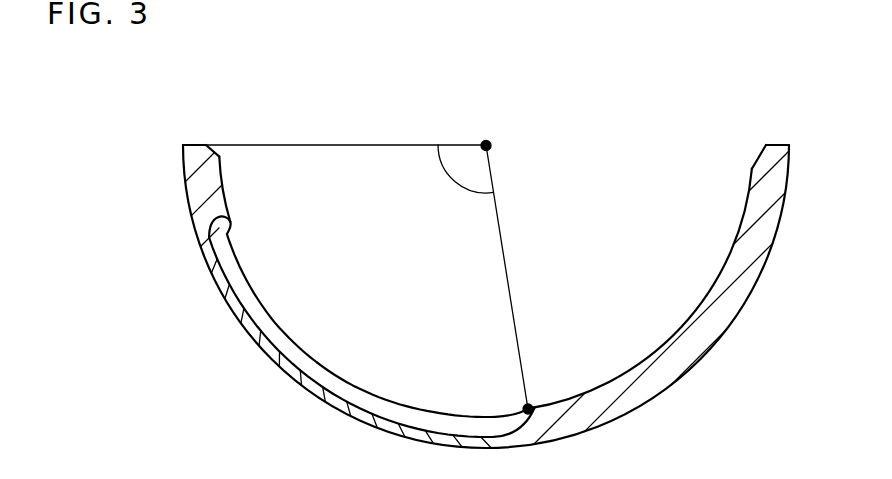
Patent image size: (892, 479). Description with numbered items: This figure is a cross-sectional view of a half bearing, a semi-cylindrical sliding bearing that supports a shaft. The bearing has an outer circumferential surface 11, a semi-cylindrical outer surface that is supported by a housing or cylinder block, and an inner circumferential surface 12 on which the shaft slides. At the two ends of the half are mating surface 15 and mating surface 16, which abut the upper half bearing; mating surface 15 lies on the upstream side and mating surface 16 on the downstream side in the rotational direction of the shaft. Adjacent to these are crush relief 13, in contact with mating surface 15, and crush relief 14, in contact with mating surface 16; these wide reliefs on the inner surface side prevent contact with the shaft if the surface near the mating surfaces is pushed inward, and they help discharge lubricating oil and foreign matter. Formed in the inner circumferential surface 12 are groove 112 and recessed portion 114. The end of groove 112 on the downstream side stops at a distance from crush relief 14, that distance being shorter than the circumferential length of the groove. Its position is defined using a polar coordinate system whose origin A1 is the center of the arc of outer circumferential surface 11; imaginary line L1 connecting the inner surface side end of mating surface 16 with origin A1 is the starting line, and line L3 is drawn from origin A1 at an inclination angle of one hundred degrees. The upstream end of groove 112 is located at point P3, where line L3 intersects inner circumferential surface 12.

The outer circumferential surface 11 is at (718, 340).
The inner circumferential surface 12 is at (708, 298).
The crush relief 13 is at (758, 159).
The crush relief 14 is at (215, 155).
The mating surface 15 is at (782, 143).
The mating surface 16 is at (193, 143).
The groove 112 is at (283, 352).
The recessed portion 114 is at (388, 408).
The imaginary line L1 is at (364, 144).
The line L3 is at (507, 266).
The origin A1 is at (488, 141).
The point P3 is at (531, 405).